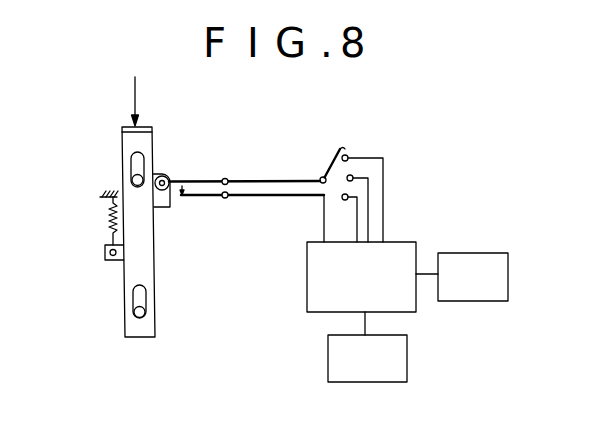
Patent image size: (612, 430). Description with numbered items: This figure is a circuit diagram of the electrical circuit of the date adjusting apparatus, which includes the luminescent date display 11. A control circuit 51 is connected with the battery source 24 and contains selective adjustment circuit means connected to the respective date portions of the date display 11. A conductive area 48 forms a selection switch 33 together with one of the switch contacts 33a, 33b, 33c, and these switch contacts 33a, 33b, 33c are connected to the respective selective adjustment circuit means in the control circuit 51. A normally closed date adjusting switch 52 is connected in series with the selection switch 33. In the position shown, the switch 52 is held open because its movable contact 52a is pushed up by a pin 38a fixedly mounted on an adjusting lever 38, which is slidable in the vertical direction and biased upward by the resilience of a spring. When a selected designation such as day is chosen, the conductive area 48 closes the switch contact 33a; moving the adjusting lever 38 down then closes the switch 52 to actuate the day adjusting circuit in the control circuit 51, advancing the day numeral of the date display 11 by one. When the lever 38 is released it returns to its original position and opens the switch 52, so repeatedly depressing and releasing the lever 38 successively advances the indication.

The adjusting lever 38 is at (148, 270).
The pin 38a is at (168, 197).
The date adjusting switch 52 is at (204, 199).
The movable contact 52a is at (190, 179).
The conductive area 48 is at (332, 158).
The selection switch 33 is at (362, 178).
The switch contact 33a is at (349, 195).
The switch contact 33b is at (353, 175).
The switch contact 33c is at (348, 155).
The control circuit 51 is at (307, 260).
The luminescent date display 11 is at (483, 253).
The battery source 24 is at (407, 345).